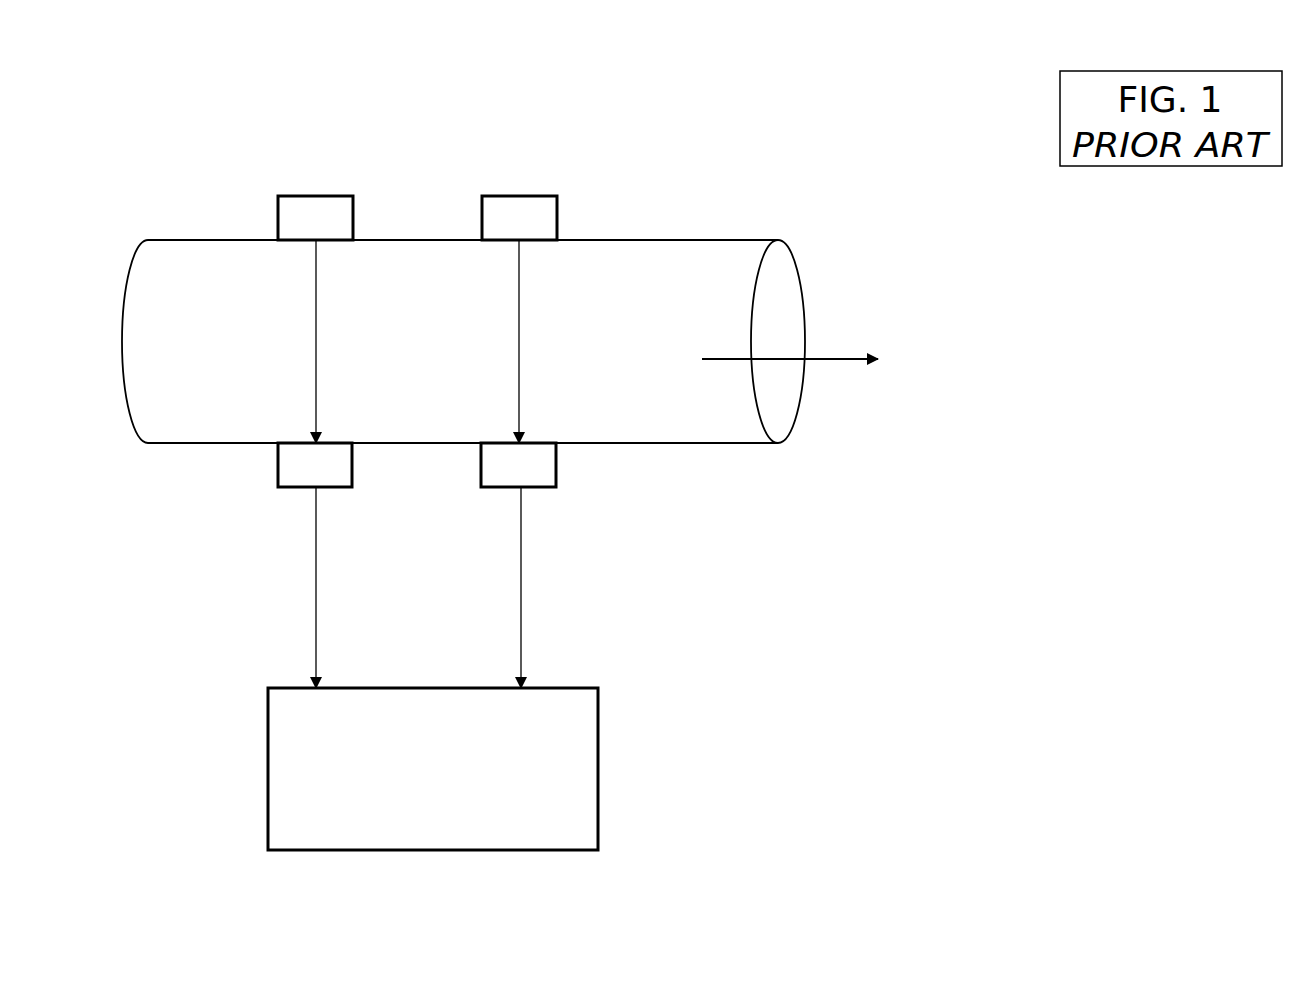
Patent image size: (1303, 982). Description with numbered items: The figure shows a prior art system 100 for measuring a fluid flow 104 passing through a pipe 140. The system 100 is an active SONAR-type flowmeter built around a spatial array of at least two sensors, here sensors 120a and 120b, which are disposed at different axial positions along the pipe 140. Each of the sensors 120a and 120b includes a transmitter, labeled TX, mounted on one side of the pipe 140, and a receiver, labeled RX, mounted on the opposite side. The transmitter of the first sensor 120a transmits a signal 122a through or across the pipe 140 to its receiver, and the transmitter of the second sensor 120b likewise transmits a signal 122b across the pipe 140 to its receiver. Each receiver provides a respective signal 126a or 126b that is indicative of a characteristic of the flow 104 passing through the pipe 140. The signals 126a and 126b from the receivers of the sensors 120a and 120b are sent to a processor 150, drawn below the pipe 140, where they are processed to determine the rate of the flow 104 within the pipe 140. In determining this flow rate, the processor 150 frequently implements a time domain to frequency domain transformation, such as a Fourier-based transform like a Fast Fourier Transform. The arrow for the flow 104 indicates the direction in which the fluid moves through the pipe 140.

The prior art system 100 is at (915, 220).
The fluid flow 104 is at (818, 371).
The sensor 120a is at (278, 462).
The sensor 120b is at (556, 462).
The signal 122a is at (346, 341).
The signal 122b is at (486, 341).
The signal 126a is at (350, 587).
The signal 126b is at (489, 587).
The pipe 140 is at (736, 271).
The processor 150 is at (268, 768).